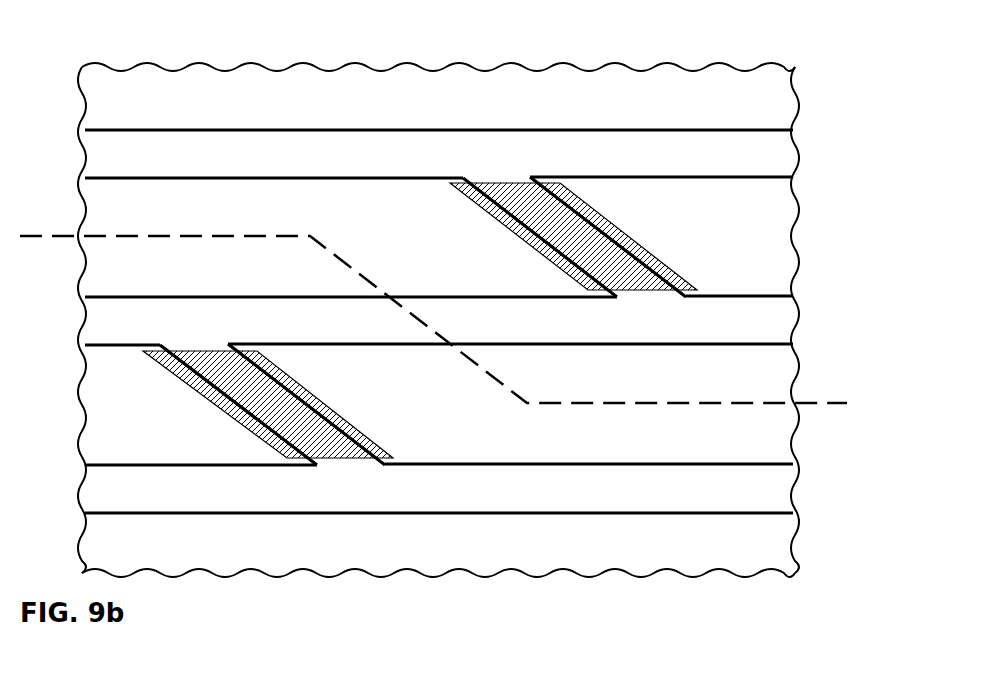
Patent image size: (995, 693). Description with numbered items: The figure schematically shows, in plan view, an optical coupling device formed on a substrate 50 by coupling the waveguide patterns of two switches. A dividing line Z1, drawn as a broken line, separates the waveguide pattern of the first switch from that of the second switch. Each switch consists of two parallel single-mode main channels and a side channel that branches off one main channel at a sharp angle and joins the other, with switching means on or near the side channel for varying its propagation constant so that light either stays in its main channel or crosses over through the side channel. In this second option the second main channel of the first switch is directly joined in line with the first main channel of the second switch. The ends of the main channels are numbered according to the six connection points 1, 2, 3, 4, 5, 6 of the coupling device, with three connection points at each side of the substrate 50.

The substrate 50 is at (718, 65).
The connection point 1 is at (421, 132).
The connection point 2 is at (421, 299).
The connection point 3 is at (420, 469).
The connection point 4 is at (679, 161).
The connection point 5 is at (456, 354).
The connection point 6 is at (455, 498).
The dividing line Z1 is at (40, 240).